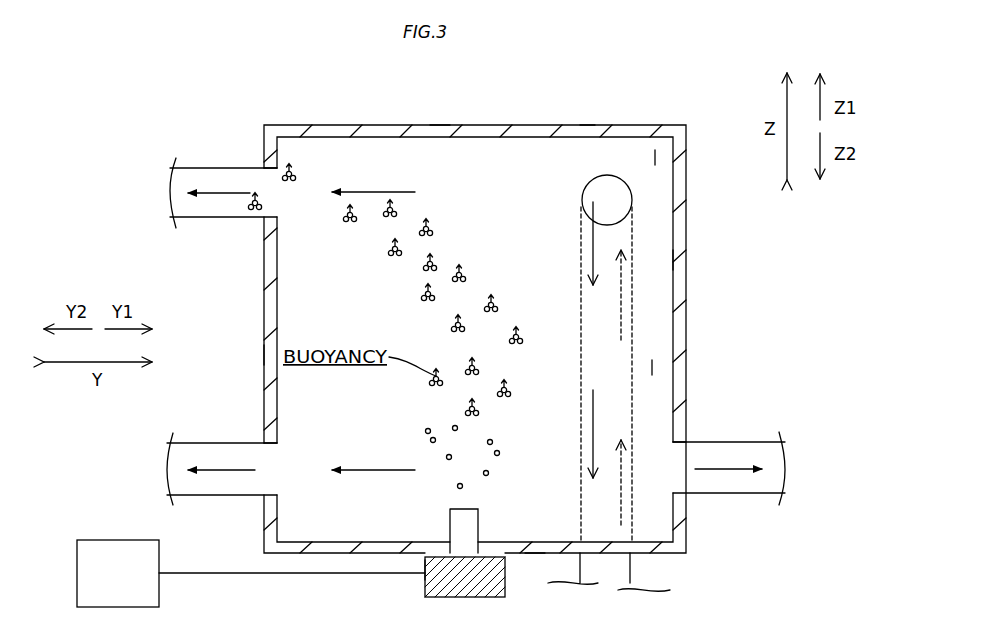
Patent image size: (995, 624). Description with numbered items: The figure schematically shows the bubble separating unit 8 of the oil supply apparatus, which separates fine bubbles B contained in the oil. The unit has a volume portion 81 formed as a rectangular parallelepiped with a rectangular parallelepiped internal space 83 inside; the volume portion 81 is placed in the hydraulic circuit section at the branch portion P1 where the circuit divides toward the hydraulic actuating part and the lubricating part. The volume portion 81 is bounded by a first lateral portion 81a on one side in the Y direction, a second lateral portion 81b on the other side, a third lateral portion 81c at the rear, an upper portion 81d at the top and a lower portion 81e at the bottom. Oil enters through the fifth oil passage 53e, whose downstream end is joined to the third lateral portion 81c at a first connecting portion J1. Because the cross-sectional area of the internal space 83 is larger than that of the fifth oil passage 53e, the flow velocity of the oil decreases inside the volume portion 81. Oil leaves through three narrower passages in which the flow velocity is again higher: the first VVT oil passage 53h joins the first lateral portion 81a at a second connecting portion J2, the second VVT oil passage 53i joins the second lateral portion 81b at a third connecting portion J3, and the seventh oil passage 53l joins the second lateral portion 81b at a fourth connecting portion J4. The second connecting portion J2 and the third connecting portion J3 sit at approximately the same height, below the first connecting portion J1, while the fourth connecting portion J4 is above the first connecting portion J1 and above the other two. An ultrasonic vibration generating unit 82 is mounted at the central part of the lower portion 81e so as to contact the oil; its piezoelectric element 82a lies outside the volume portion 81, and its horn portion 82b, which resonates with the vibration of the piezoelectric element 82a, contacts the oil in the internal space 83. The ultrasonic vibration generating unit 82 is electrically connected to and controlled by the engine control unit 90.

The bubble separating unit 8 is at (586, 117).
The volume portion 81 is at (673, 300).
The first lateral portion 81a is at (673, 260).
The second lateral portion 81b is at (270, 355).
The third lateral portion 81c is at (652, 368).
The upper portion 81d is at (441, 125).
The lower portion 81e is at (535, 553).
The internal space 83 is at (660, 157).
The first connecting portion J1 is at (632, 195).
The second connecting portion J2 is at (686, 440).
The third connecting portion J3 is at (266, 442).
The fourth connecting portion J4 is at (270, 168).
The seventh oil passage 53l is at (222, 168).
The second VVT oil passage 53i is at (221, 495).
The first VVT oil passage 53h is at (748, 493).
The fifth oil passage 53e is at (632, 338).
The branch portion P1 is at (277, 315).
The fine bubbles B is at (494, 443).
The ultrasonic vibration generating unit 82 is at (425, 590).
The piezoelectric element 82a is at (428, 560).
The horn portion 82b is at (470, 525).
The engine control unit (ECU) 90 is at (125, 540).